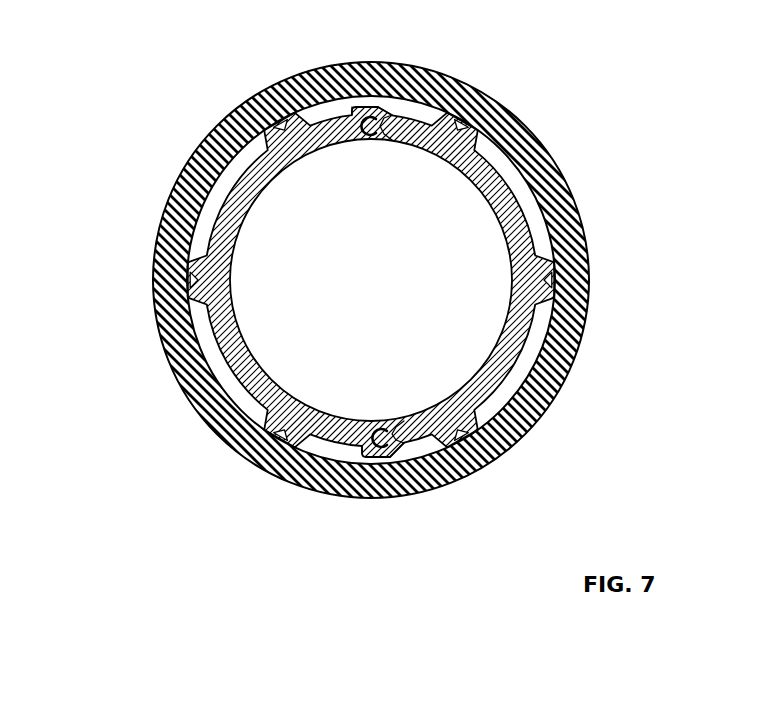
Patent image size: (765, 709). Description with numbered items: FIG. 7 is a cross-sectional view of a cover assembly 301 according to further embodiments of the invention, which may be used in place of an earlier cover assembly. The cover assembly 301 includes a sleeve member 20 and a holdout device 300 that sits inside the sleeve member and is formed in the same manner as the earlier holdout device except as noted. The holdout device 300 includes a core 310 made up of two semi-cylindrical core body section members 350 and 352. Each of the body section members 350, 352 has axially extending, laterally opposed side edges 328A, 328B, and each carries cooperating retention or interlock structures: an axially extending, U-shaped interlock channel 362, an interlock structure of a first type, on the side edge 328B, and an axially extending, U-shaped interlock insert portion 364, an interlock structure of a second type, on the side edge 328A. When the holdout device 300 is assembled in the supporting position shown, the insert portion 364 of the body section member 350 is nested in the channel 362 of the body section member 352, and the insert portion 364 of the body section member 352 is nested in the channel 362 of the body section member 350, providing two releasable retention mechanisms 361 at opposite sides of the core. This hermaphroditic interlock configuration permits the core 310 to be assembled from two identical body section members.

The cover assembly 301 is at (131, 58).
The sleeve member 20 is at (168, 270).
The holdout device 300 is at (232, 385).
The core body section member 350 is at (228, 224).
The core body section member 352 is at (510, 354).
The core 310 is at (219, 324).
The side edge 328A is at (350, 120).
The side edge 328B is at (372, 137).
The releasable retention mechanism 361 is at (346, 77).
The interlock channel 362 is at (377, 108).
The interlock insert portion 364 is at (350, 120).